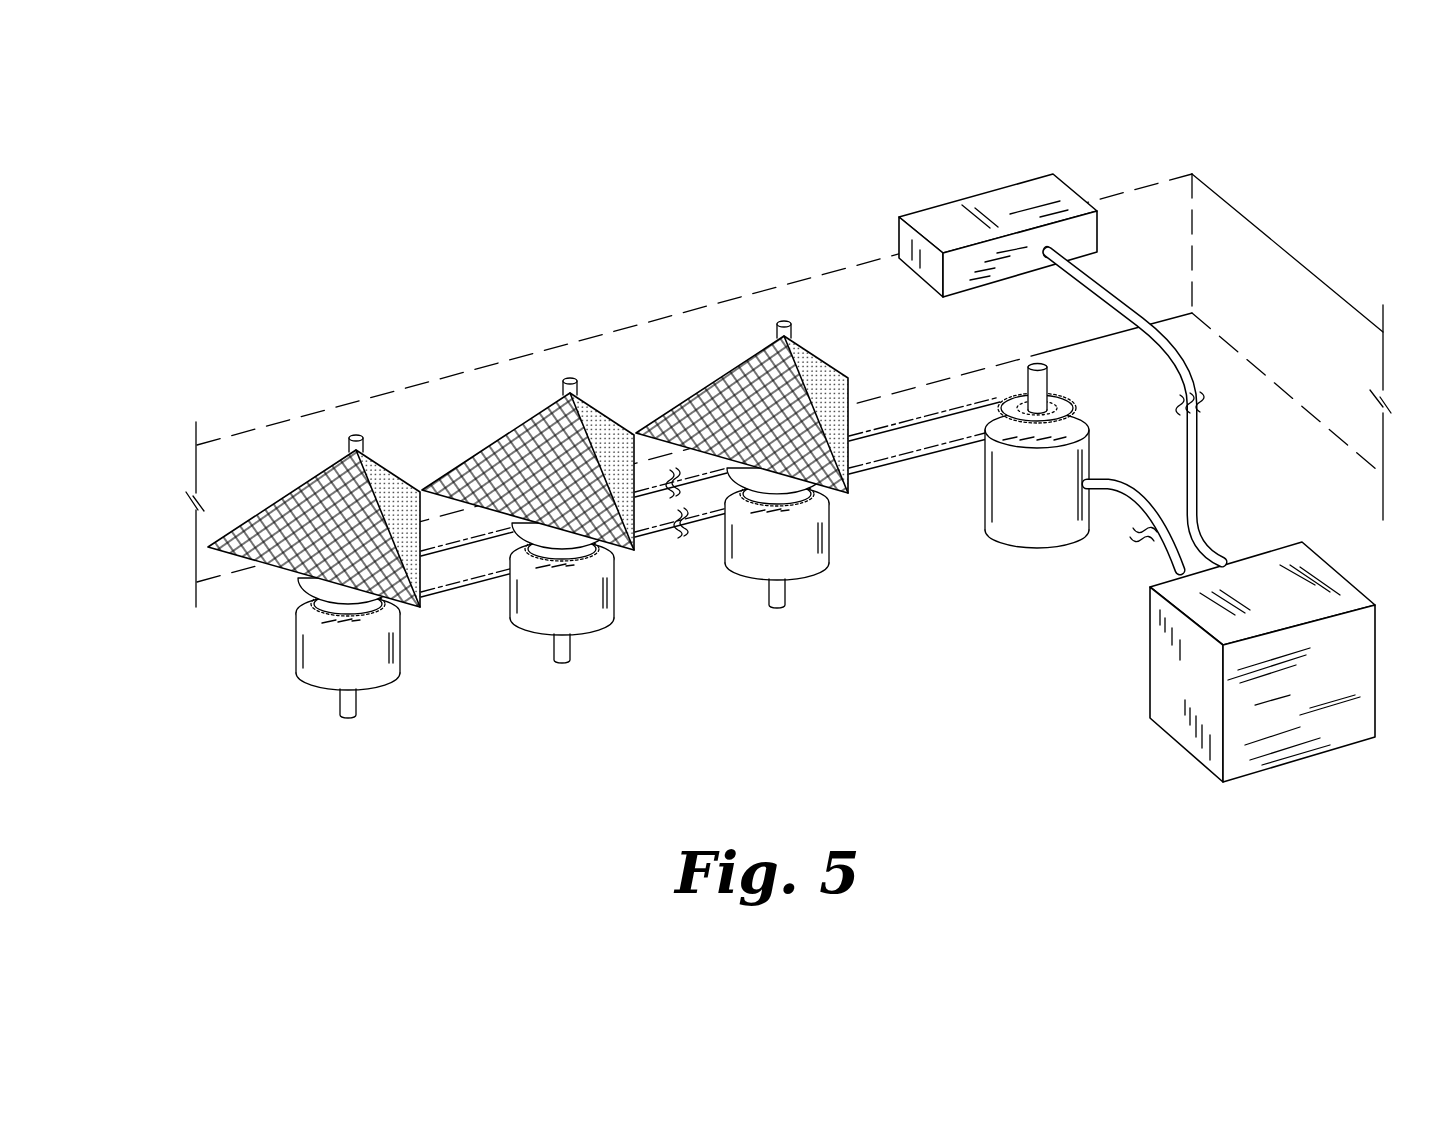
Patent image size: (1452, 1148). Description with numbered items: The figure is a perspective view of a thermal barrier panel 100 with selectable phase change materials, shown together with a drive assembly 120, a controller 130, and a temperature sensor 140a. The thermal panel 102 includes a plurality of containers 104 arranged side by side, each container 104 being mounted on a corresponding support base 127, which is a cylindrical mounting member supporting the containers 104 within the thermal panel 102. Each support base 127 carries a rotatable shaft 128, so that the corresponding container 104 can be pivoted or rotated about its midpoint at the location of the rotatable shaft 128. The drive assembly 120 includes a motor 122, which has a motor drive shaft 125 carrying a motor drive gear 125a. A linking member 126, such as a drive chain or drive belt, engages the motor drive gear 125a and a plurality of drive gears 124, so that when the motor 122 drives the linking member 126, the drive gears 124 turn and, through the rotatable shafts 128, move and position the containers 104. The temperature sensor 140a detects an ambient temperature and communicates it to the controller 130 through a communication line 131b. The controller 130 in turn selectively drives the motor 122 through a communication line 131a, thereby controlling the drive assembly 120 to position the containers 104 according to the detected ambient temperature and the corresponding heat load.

The thermal barrier panel 100 is at (322, 178).
The thermal panel 102 is at (462, 356).
The containers 104 is at (306, 458).
The drive assembly 120 is at (715, 630).
The motor 122 is at (1037, 530).
The drive gears 124 is at (380, 616).
The motor drive shaft 125 is at (1037, 363).
The motor drive gear 125a is at (1053, 394).
The linking member 126 is at (925, 413).
The support bases 127 is at (400, 653).
The rotatable shaft 128 is at (362, 446).
The controller 130 is at (1150, 691).
The communication line 131a is at (1148, 555).
The communication line 131b is at (1197, 503).
The temperature sensor 140a is at (1015, 195).